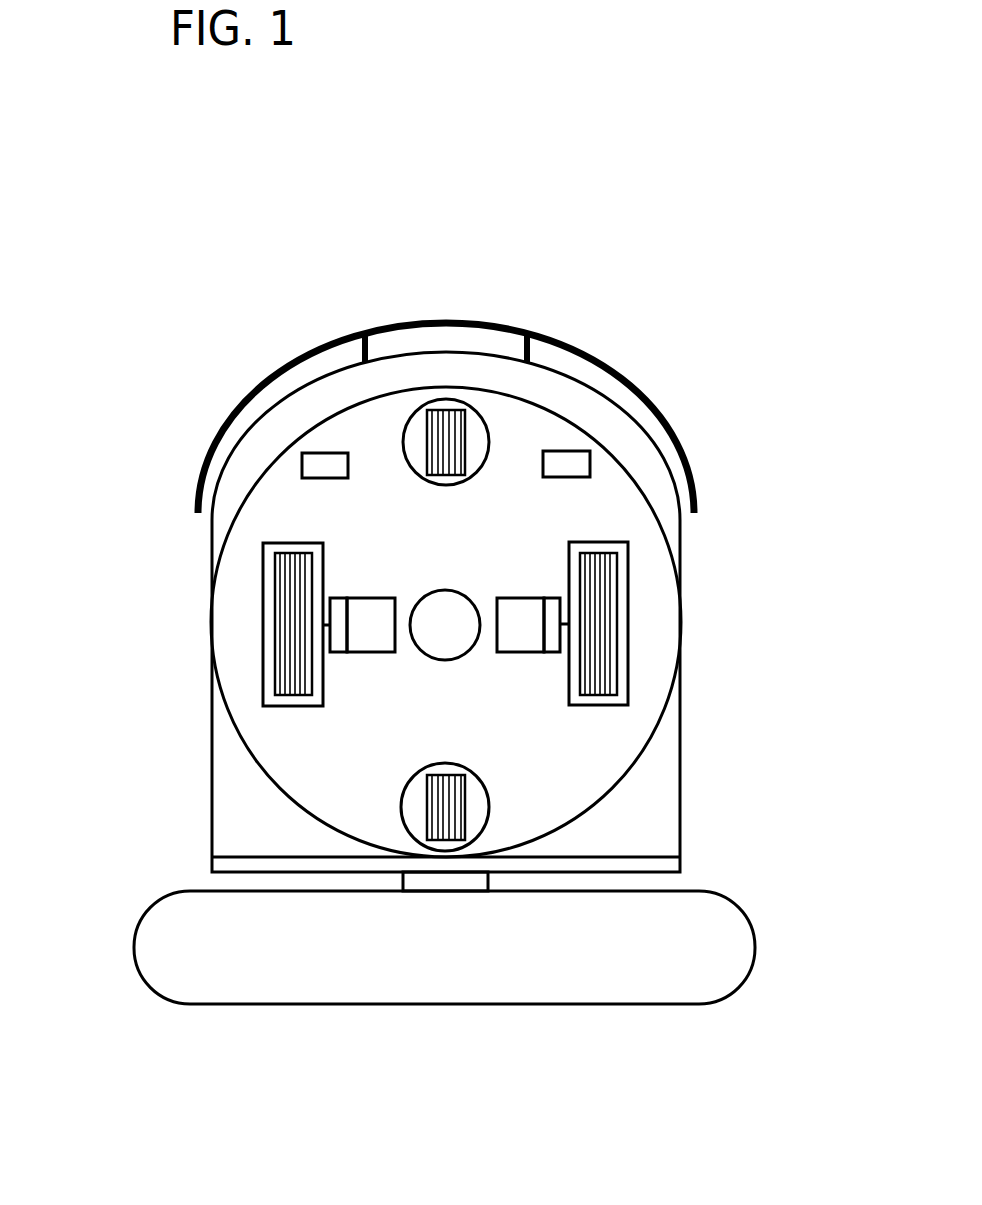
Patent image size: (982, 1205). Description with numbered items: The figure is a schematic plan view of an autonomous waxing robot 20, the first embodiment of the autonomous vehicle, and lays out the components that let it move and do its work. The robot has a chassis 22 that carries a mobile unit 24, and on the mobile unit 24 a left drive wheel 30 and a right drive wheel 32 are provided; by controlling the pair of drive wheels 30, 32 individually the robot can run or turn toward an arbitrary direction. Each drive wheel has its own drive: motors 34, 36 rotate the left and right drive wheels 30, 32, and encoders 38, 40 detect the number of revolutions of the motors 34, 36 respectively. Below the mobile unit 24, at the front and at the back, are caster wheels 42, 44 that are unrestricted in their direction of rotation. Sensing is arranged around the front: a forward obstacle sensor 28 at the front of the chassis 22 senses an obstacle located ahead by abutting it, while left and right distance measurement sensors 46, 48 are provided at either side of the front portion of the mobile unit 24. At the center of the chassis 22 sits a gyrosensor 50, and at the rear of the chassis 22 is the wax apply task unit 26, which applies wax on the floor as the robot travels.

The autonomous waxing robot 20 is at (760, 272).
The chassis 22 is at (652, 488).
The mobile unit 24 is at (522, 430).
The wax apply task unit 26 is at (705, 938).
The forward obstacle sensor 28 is at (562, 336).
The left drive wheel 30 is at (283, 653).
The right drive wheel 32 is at (608, 652).
The motor 34 is at (367, 605).
The motor 36 is at (523, 605).
The encoder 38 is at (337, 608).
The encoder 40 is at (553, 607).
The caster wheel 42 is at (433, 423).
The caster wheel 44 is at (443, 808).
The left distance measurement sensor 46 is at (308, 463).
The right distance measurement sensor 48 is at (585, 462).
The gyrosensor 50 is at (440, 637).